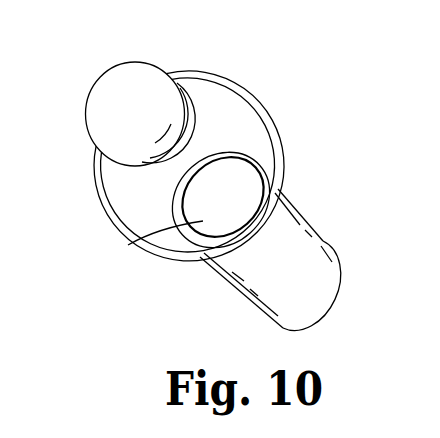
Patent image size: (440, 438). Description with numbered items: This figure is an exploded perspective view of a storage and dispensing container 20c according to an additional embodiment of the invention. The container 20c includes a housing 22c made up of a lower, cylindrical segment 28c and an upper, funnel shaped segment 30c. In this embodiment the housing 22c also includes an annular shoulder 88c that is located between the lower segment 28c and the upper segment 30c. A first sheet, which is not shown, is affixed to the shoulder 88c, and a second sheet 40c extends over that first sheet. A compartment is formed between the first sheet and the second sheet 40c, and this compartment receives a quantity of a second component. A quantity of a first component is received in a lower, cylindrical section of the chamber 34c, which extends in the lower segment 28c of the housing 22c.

The container 20c is at (305, 157).
The housing 22c is at (323, 241).
The lower, cylindrical segment 28c is at (275, 292).
The upper, funnel shaped segment 30c is at (128, 194).
The chamber 34c is at (155, 229).
The second sheet 40c is at (123, 97).
The annular shoulder 88c is at (235, 158).